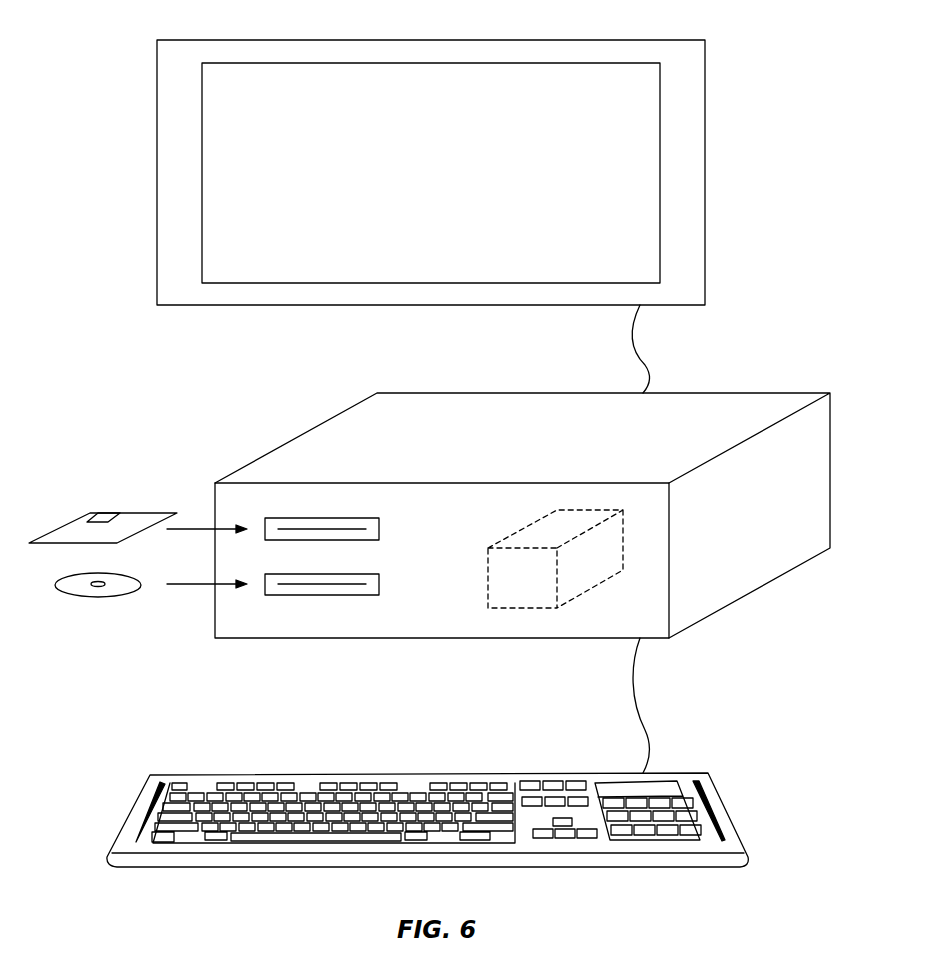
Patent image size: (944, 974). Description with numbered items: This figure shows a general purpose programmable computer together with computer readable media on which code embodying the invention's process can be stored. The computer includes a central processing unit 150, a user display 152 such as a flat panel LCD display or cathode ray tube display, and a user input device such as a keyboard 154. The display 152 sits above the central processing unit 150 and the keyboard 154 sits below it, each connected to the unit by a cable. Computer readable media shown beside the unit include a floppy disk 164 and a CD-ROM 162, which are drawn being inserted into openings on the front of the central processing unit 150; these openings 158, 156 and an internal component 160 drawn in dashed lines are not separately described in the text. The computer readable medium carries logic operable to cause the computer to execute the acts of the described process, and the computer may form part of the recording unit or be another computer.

The central processing unit 150 is at (760, 393).
The user display 152 is at (645, 40).
The keyboard 154 is at (687, 773).
The optical disc drive 156 is at (343, 572).
The floppy disk drive 158 is at (343, 516).
The processor / memory unit 160 is at (488, 552).
The CD-ROM 162 is at (130, 575).
The floppy disk 164 is at (132, 512).